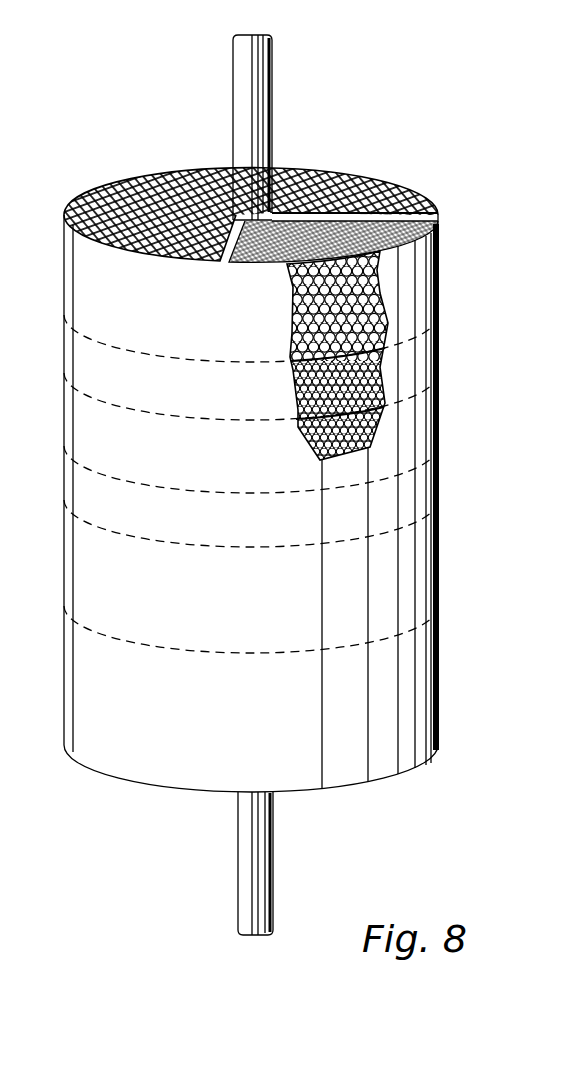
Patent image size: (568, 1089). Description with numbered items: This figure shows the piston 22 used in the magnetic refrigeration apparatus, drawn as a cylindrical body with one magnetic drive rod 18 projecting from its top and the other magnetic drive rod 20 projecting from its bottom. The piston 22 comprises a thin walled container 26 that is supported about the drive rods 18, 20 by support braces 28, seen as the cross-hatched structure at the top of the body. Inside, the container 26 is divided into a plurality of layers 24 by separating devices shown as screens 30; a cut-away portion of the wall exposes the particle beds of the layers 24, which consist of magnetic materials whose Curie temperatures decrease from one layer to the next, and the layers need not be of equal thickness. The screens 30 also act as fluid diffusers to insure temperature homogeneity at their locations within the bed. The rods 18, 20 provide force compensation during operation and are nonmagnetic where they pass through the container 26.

The magnetic drive rod 18 is at (273, 67).
The magnetic drive rod 20 is at (273, 848).
The piston 22 is at (231, 734).
The layers 24 is at (387, 407).
The thin walled container 26 is at (183, 319).
The support braces 28 is at (354, 216).
The screens 30 is at (421, 199).